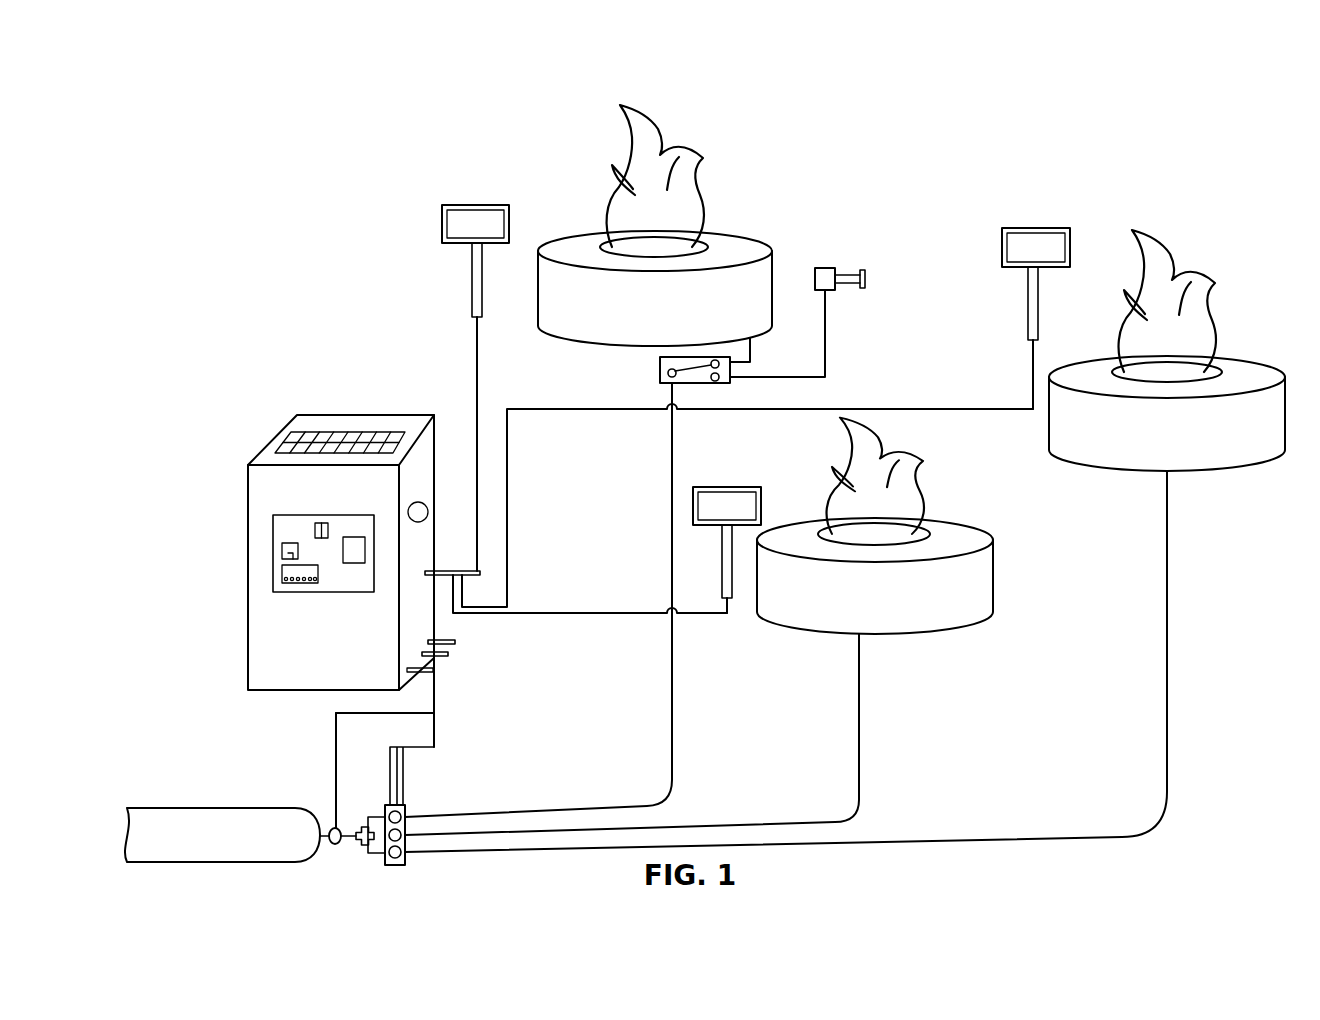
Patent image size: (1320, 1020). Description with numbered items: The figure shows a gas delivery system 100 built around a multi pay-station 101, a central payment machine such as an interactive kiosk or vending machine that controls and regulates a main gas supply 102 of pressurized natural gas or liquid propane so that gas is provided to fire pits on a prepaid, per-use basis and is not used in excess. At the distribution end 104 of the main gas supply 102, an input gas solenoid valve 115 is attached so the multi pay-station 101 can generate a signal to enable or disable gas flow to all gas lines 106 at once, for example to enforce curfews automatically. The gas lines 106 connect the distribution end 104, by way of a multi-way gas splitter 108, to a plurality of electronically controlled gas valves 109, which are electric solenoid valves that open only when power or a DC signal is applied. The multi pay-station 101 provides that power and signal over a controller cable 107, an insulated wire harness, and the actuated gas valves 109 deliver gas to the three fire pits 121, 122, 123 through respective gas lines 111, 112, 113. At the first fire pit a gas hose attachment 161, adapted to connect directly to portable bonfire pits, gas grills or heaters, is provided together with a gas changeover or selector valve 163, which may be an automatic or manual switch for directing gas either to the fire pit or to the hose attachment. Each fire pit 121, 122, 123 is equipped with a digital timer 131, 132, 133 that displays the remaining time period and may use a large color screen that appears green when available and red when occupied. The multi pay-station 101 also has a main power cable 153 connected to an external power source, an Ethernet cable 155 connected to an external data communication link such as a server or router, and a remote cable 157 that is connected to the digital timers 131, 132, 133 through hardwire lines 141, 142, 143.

The gas delivery system 100 is at (316, 118).
The multi pay-station 101 is at (250, 463).
The main gas supply 102 is at (222, 835).
The distribution end 104 is at (312, 805).
The gas lines 106 is at (377, 872).
The controller cable 107 is at (434, 692).
The multi-way gas splitter 108 is at (358, 850).
The electronically controlled gas valves 109 is at (408, 804).
The gas line 111 is at (672, 700).
The gas line 112 is at (860, 787).
The gas line 113 is at (1167, 738).
The input gas solenoid valve 115 is at (340, 826).
The fire pit 121 is at (720, 243).
The fire pit 122 is at (960, 527).
The fire pit 123 is at (1243, 368).
The digital timer 131 is at (510, 205).
The digital timer 132 is at (715, 487).
The digital timer 133 is at (1068, 226).
The hardwire line 141 is at (477, 368).
The hardwire line 142 is at (605, 612).
The hardwire line 143 is at (507, 437).
The main power cable 153 is at (455, 640).
The Ethernet cable 155 is at (448, 654).
The remote cable 157 is at (462, 572).
The gas hose attachment 161 is at (835, 267).
The gas changeover or selector valve 163 is at (660, 363).